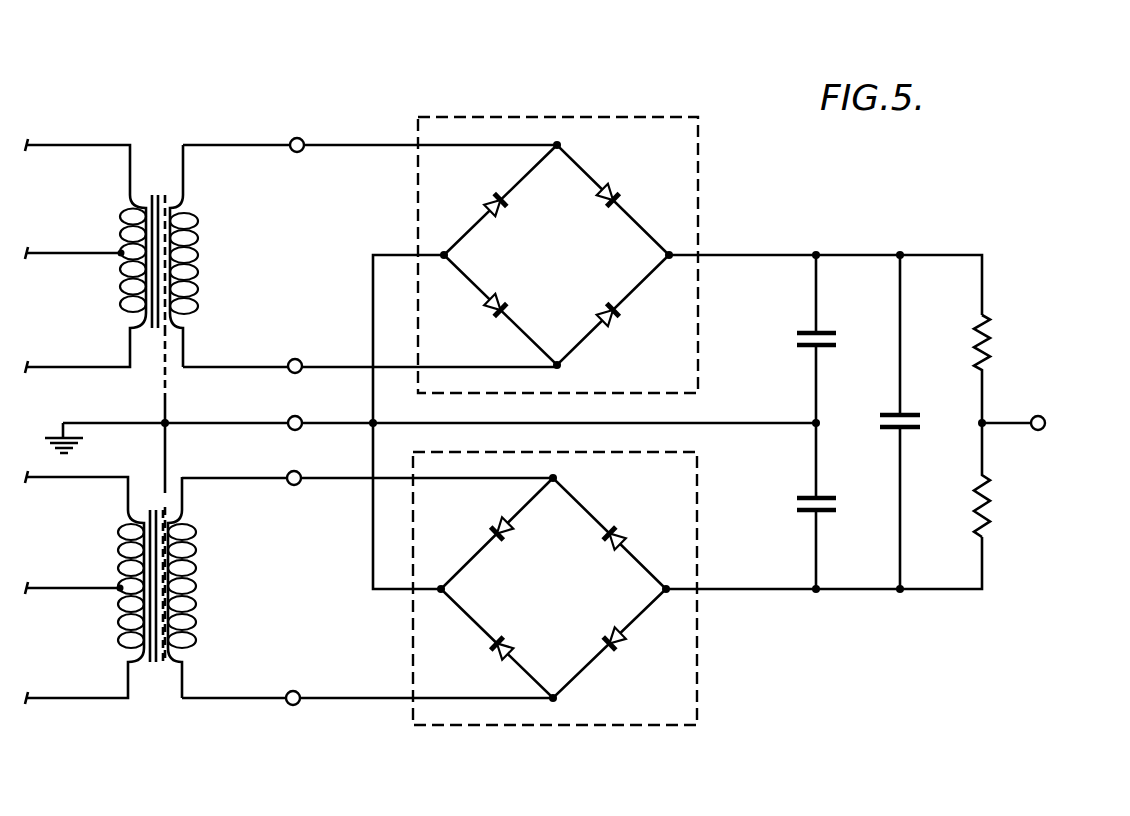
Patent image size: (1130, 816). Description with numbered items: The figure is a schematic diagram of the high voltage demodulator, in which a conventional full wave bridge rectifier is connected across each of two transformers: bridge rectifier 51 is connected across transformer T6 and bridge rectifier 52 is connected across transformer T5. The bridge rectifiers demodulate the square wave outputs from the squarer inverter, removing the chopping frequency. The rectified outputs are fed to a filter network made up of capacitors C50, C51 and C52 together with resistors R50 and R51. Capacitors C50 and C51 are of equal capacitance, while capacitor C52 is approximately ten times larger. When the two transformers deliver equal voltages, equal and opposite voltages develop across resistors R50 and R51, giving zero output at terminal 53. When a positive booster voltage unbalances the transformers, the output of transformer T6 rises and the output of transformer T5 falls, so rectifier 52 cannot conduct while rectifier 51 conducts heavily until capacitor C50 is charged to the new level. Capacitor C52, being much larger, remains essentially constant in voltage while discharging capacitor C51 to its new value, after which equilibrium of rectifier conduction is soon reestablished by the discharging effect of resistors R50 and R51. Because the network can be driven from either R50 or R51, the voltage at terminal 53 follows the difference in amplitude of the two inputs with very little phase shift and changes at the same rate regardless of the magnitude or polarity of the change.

The transformer T6 is at (108, 217).
The transformer T5 is at (155, 680).
The bridge rectifier 51 is at (628, 137).
The bridge rectifier 52 is at (605, 712).
The capacitor C50 is at (810, 330).
The capacitor C51 is at (805, 514).
The capacitor C52 is at (895, 413).
The resistor R50 is at (987, 338).
The resistor R51 is at (988, 513).
The output terminal 53 is at (1034, 418).